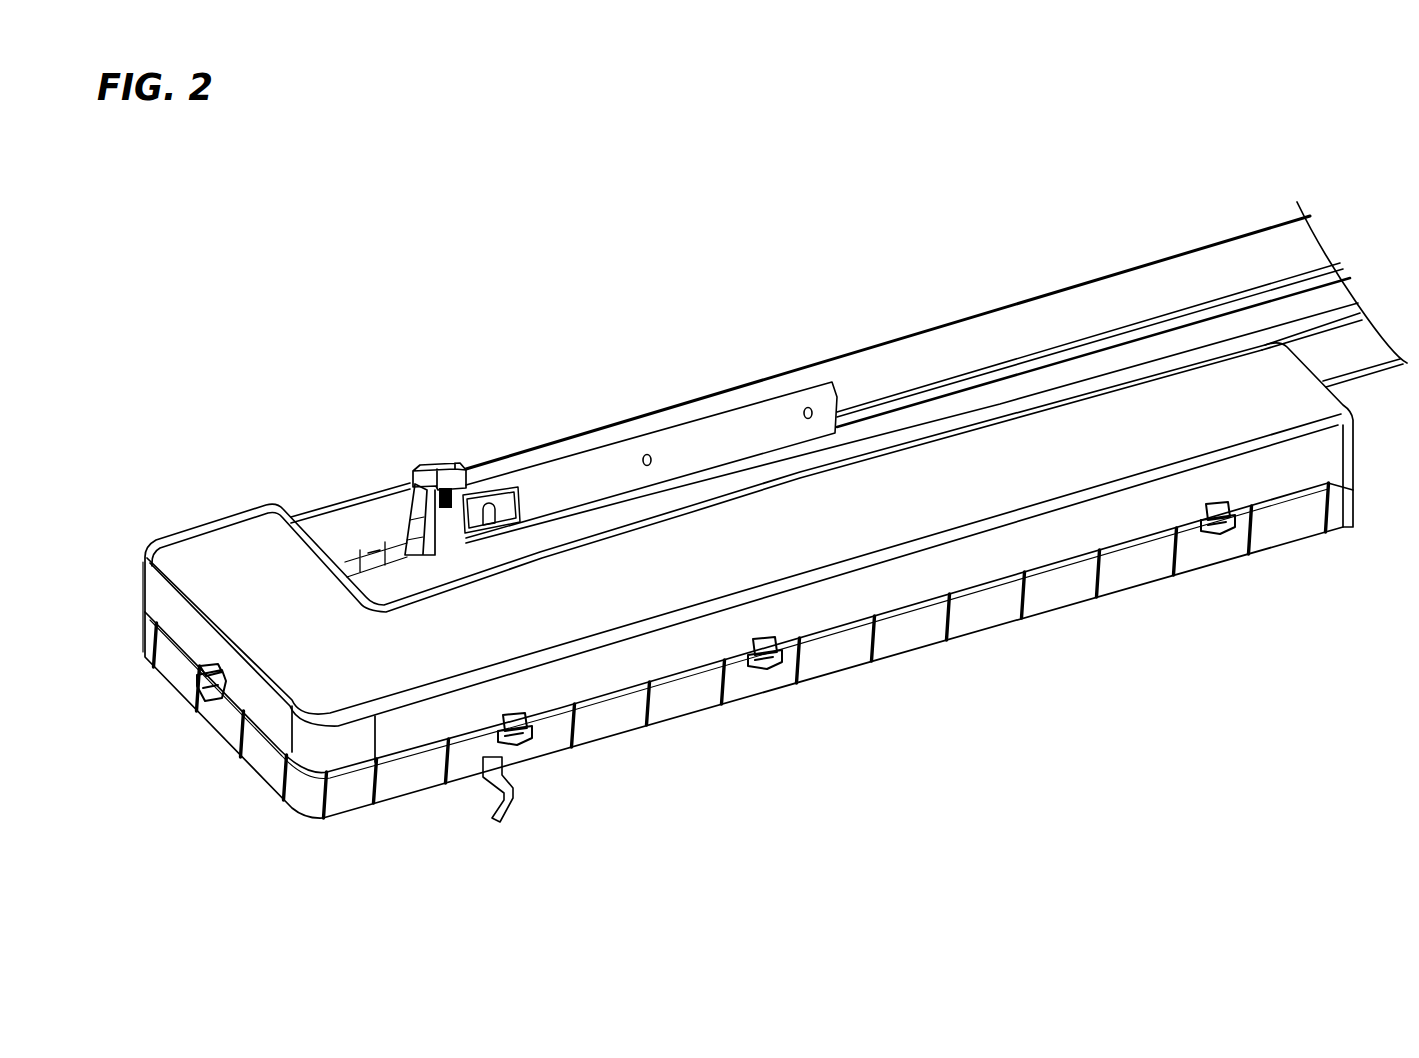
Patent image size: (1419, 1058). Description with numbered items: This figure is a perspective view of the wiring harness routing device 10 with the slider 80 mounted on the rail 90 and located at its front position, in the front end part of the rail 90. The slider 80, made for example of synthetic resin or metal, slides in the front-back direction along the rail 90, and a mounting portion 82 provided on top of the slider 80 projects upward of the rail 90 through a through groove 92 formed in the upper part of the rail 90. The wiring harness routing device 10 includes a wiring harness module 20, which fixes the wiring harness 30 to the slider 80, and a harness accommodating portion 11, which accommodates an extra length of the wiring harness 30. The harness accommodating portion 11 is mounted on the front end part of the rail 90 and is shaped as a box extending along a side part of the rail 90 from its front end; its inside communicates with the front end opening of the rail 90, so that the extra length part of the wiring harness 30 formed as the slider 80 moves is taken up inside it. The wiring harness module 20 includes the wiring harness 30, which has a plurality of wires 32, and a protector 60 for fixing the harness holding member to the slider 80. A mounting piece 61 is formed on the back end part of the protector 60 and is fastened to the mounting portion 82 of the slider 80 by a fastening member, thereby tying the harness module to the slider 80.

The wiring harness routing device 10 is at (848, 823).
The harness accommodating portion 11 is at (795, 622).
The wiring harness module 20 is at (560, 648).
The protector 60 is at (448, 532).
The mounting piece 61 is at (505, 506).
The wiring harness 30 is at (535, 820).
The wires 32 is at (503, 808).
The slider 80 is at (651, 428).
The mounting portion 82 is at (708, 448).
The rail 90 is at (1012, 335).
The through groove 92 is at (1127, 337).